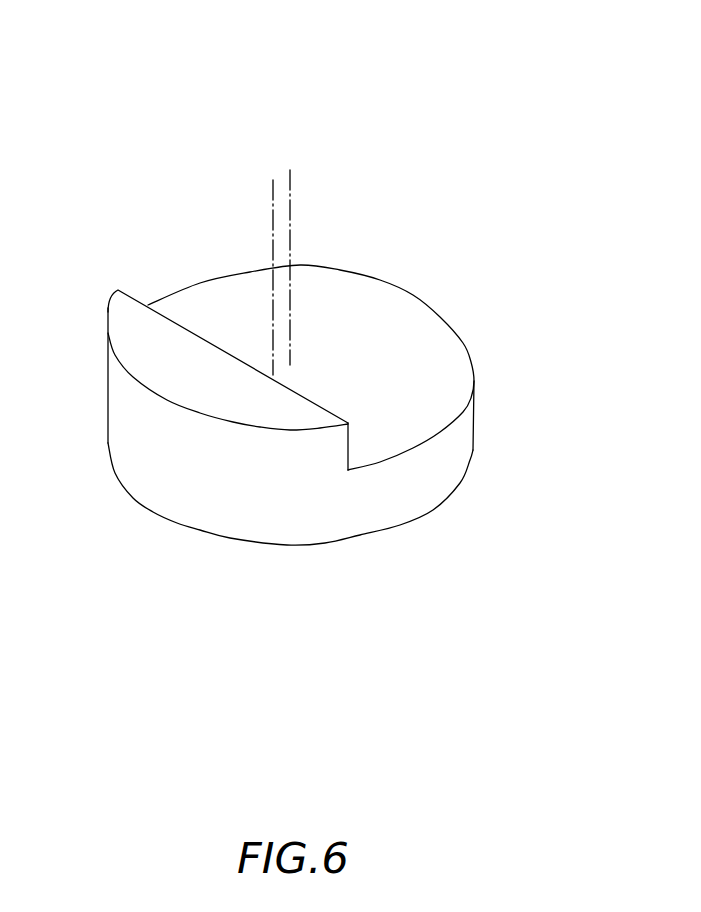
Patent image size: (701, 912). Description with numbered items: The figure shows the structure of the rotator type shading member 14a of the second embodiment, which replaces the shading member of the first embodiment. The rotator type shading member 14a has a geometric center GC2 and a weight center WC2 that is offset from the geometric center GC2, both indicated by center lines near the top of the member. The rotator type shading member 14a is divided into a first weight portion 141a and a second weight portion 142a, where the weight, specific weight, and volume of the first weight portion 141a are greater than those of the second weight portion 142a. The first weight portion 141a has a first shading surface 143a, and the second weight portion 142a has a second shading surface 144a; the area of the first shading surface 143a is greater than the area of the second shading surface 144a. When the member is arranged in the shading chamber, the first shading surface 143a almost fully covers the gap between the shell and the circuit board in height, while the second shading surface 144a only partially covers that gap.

The rotator type shading member 14a is at (454, 104).
The first weight portion 141a is at (128, 317).
The second weight portion 142a is at (430, 338).
The first shading surface 143a is at (177, 478).
The second shading surface 144a is at (477, 400).
The weight center WC2 is at (272, 238).
The geometric center GC2 is at (290, 232).